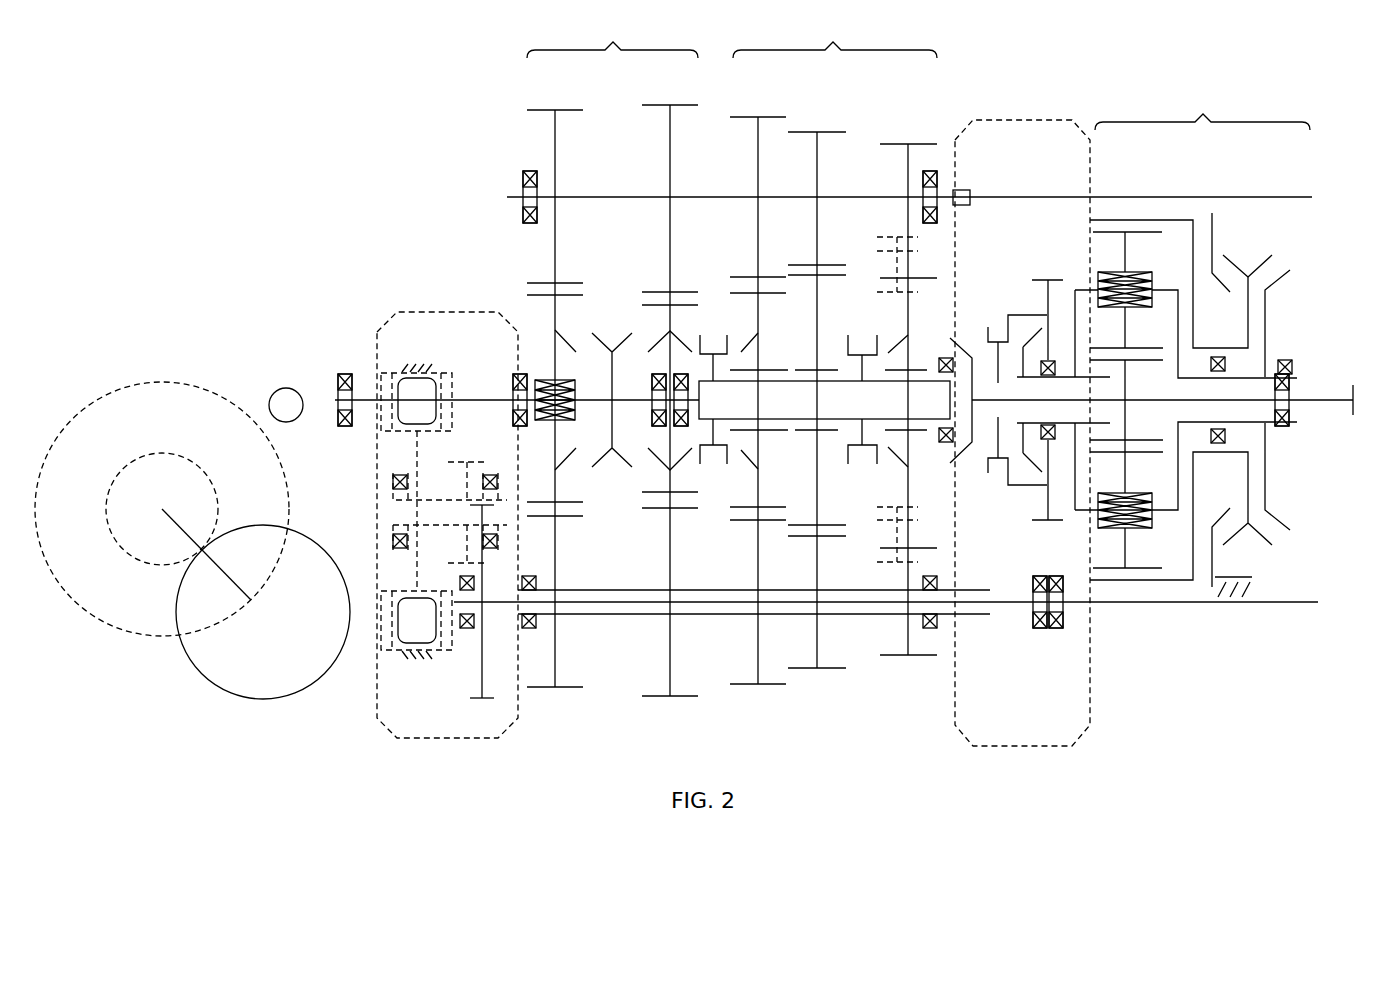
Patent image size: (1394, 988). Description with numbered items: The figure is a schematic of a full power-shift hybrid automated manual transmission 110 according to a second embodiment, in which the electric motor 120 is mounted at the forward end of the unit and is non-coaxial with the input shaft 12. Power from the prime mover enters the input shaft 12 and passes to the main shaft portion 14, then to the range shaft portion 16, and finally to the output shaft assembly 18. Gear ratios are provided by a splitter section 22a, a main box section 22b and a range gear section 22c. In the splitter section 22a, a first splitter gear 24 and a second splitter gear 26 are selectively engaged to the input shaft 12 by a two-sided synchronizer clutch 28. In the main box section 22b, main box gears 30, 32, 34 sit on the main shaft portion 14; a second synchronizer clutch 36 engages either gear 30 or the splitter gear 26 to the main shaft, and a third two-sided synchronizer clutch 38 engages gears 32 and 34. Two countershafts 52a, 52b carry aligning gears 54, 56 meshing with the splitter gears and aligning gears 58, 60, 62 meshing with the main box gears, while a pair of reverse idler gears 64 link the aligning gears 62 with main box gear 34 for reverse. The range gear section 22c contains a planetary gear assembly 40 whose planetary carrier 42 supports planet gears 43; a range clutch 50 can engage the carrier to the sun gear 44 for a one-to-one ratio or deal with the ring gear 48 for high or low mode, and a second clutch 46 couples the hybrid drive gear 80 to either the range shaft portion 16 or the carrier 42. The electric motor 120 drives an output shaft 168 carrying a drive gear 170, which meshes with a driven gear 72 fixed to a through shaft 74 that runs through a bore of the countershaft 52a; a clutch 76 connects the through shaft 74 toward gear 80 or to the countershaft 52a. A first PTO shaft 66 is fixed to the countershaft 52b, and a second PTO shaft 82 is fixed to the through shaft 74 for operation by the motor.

The input shaft 12 is at (482, 399).
The main shaft portion 14 is at (785, 380).
The range shaft portion 16 is at (1182, 400).
The output shaft assembly 18 is at (1322, 400).
The splitter section 22a is at (612, 38).
The main box section 22b is at (835, 38).
The range gear section 22c is at (1202, 109).
The first splitter gear 24 is at (568, 295).
The second splitter gear 26 is at (680, 305).
The two-sided synchronizer clutch 28 is at (612, 470).
The main box gear 30 is at (762, 277).
The main box gear 32 is at (828, 275).
The main box gear 34 is at (930, 278).
The second synchronizer clutch 36 is at (713, 478).
The third two-sided synchronizer clutch 38 is at (862, 466).
The planetary gear assembly 40 is at (1134, 574).
The planetary carrier 42 is at (1172, 512).
The planet gears 43 is at (1105, 230).
The sun gear 44 is at (1135, 358).
The second clutch 46 is at (1001, 310).
The ring gear 48 is at (1178, 220).
The range clutch 50 is at (1258, 253).
The countershaft 52a is at (592, 615).
The countershaft 52b is at (637, 197).
The aligning gear 54 is at (562, 110).
The aligning gear 56 is at (662, 105).
The aligning gear 58 is at (770, 117).
The aligning gear 60 is at (828, 132).
The aligning gear 62 is at (898, 144).
The reverse idler gears 64 is at (897, 292).
The first PTO shaft 66 is at (1265, 197).
The driven gear 72 is at (490, 700).
The through shaft 74 is at (884, 605).
The clutch 76 is at (1001, 686).
The hybrid drive gear 80 is at (1040, 280).
The second PTO shaft 82 is at (1288, 605).
The hybrid transmission 110 is at (935, 92).
The electric motor 120 is at (389, 663).
The output shaft 168 is at (442, 500).
The drive gear 170 is at (455, 560).